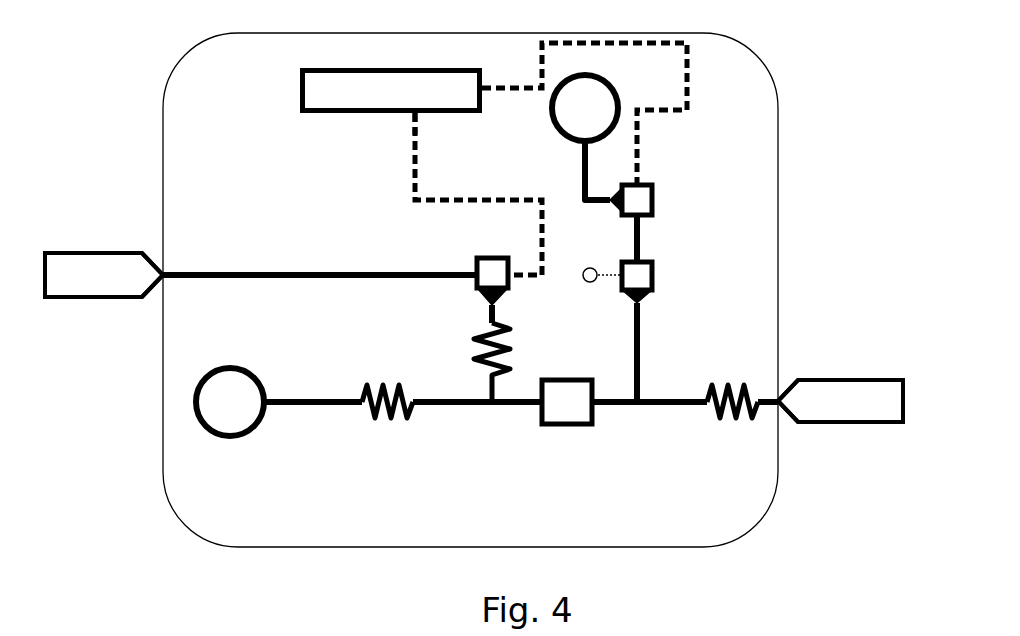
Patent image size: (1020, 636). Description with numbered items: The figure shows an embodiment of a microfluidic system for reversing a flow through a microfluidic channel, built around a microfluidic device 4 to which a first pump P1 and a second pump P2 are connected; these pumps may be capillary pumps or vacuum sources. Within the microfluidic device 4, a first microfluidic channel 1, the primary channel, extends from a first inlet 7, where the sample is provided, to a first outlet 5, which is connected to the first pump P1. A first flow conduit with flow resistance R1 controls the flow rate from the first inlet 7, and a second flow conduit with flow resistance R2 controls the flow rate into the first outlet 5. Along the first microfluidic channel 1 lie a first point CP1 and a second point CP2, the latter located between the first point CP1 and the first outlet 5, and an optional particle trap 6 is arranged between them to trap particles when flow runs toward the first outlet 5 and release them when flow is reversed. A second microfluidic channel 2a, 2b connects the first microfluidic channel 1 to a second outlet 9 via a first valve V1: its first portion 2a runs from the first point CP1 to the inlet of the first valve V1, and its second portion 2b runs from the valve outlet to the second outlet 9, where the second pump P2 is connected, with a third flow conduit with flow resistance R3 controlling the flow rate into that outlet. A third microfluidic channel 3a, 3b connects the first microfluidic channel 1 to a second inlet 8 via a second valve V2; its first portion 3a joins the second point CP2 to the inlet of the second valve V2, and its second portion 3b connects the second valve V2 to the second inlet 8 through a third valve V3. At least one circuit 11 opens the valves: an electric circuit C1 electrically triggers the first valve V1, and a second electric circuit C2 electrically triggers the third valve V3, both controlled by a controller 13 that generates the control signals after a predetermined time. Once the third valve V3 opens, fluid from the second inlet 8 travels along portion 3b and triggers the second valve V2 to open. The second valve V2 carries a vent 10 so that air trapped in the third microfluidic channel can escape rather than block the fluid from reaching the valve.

The first microfluidic channel 1 is at (447, 405).
The first portion of the second microfluidic channel 2a is at (488, 310).
The second portion of the second microfluidic channel 2b is at (383, 272).
The first portion of the third microfluidic channel 3a is at (640, 318).
The second portion of the third microfluidic channel 3b is at (582, 185).
The microfluidic device 4 is at (778, 145).
The first outlet 5 is at (778, 402).
The particle trap 6 is at (567, 425).
The first inlet 7 is at (245, 366).
The second inlet 8 is at (612, 75).
The second outlet 9 is at (165, 268).
The vent 10 is at (587, 268).
The circuit 11 is at (415, 125).
The controller 13 is at (388, 68).
The electric circuit C1 is at (459, 194).
The second electric circuit C2 is at (605, 114).
The first valve V1 is at (491, 269).
The second valve V2 is at (660, 282).
The third valve V3 is at (660, 202).
The first flow conduit with flow resistance R1 is at (386, 421).
The second flow conduit with flow resistance R2 is at (732, 419).
The third flow conduit with flow resistance R3 is at (513, 361).
The first point CP1 is at (492, 405).
The second point CP2 is at (637, 405).
The first pump P1 is at (840, 401).
The second pump P2 is at (104, 275).